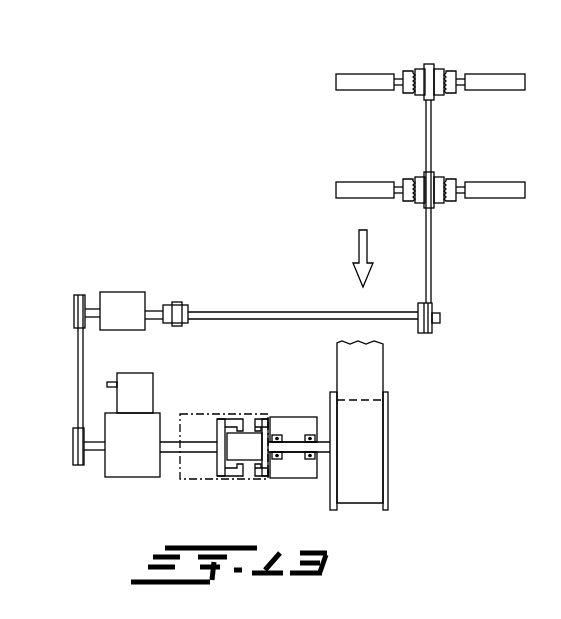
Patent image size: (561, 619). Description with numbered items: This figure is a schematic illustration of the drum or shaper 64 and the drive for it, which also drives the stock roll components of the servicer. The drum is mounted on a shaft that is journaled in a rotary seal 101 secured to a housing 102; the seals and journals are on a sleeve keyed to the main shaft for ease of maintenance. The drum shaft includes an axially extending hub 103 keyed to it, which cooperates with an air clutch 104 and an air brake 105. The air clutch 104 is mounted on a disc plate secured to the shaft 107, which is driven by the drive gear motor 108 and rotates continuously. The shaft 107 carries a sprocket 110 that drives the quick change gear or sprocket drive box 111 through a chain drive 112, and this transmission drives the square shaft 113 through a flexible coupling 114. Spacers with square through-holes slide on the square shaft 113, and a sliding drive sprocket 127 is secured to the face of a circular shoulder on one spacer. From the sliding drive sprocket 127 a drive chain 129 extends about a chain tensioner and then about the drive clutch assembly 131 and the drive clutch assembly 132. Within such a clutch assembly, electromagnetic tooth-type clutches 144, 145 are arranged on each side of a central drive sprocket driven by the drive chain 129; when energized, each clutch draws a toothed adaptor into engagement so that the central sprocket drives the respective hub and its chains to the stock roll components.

The drum or shaper 64 is at (387, 493).
The rotary seal 101 is at (293, 441).
The housing 102 is at (293, 478).
The hub 103 is at (248, 432).
The air clutch 104 is at (228, 421).
The air brake 105 is at (256, 478).
The shaft 107 is at (172, 453).
The drive gear motor 108 is at (153, 373).
The sprocket 110 is at (73, 458).
The quick change gear or sprocket drive box 111 is at (115, 292).
The chain drive 112 is at (78, 356).
The square shaft 113 is at (232, 311).
The flexible coupling 114 is at (176, 303).
The drive sprocket 127 is at (433, 306).
The drive chain 129 is at (431, 261).
The drive clutch assembly 131 is at (447, 52).
The drive clutch assembly 132 is at (430, 186).
The electromagnetic tooth-type clutch 144 is at (408, 171).
The electromagnetic tooth-type clutch 145 is at (449, 217).